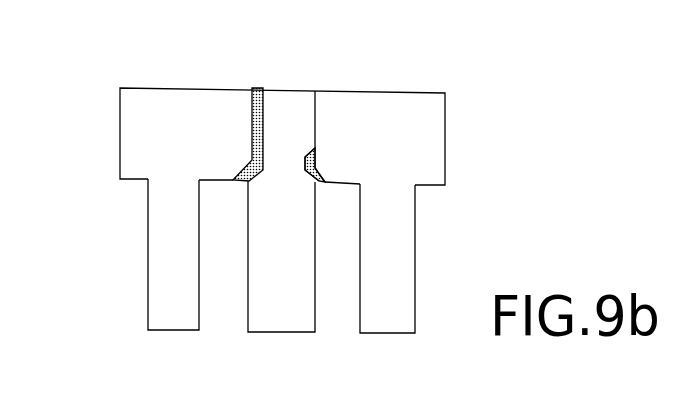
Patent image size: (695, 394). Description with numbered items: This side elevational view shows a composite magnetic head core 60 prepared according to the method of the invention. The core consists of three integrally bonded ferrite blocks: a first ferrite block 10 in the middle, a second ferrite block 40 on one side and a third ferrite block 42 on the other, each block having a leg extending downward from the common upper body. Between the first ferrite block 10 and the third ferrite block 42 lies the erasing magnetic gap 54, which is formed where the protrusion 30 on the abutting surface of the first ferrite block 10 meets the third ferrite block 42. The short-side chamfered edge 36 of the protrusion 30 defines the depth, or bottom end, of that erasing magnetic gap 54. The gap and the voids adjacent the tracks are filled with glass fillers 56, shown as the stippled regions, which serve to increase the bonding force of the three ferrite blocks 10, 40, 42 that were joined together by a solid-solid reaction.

The composite magnetic head core 60 is at (110, 68).
The protrusion 30 is at (315, 118).
The erasing magnetic gap 54 is at (315, 89).
The glass filler 56 is at (257, 88).
The short-side chamfered edge 36 is at (315, 158).
The second ferrite block 40 is at (178, 315).
The first ferrite block 10 is at (283, 318).
The third ferrite block 42 is at (385, 318).